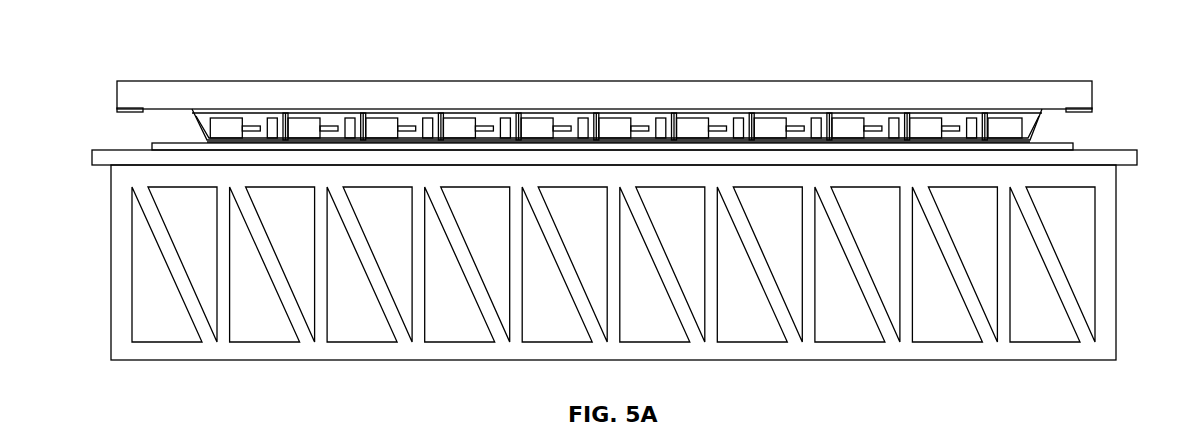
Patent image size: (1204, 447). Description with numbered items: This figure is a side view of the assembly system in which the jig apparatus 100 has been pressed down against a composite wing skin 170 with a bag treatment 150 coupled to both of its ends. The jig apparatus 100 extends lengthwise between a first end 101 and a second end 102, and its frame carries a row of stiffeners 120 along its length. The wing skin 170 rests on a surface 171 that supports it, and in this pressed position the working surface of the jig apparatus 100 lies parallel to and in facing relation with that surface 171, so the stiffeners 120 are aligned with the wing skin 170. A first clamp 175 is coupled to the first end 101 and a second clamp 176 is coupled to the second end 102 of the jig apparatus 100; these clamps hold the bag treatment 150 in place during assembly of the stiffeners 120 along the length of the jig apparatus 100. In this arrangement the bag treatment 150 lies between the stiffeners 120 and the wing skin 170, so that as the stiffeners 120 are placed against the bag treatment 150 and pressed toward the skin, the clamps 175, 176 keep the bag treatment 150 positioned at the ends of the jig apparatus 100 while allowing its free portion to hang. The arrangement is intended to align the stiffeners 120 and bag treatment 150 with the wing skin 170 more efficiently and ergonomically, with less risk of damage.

The jig apparatus 100 is at (678, 62).
The first end 101 is at (1062, 66).
The second end 102 is at (178, 66).
The stiffeners 120 is at (285, 116).
The bag treatment 150 is at (203, 118).
The composite wing skin 170 is at (1075, 149).
The surface 171 is at (106, 165).
The first clamp 175 is at (1094, 110).
The second clamp 176 is at (117, 109).